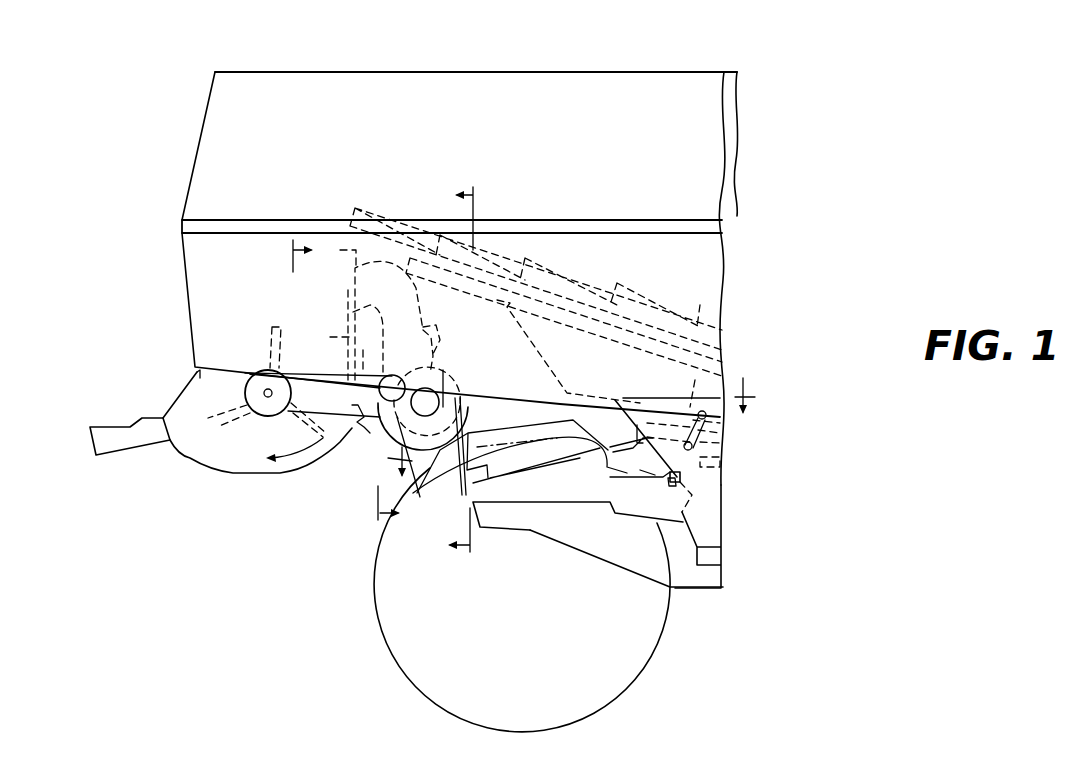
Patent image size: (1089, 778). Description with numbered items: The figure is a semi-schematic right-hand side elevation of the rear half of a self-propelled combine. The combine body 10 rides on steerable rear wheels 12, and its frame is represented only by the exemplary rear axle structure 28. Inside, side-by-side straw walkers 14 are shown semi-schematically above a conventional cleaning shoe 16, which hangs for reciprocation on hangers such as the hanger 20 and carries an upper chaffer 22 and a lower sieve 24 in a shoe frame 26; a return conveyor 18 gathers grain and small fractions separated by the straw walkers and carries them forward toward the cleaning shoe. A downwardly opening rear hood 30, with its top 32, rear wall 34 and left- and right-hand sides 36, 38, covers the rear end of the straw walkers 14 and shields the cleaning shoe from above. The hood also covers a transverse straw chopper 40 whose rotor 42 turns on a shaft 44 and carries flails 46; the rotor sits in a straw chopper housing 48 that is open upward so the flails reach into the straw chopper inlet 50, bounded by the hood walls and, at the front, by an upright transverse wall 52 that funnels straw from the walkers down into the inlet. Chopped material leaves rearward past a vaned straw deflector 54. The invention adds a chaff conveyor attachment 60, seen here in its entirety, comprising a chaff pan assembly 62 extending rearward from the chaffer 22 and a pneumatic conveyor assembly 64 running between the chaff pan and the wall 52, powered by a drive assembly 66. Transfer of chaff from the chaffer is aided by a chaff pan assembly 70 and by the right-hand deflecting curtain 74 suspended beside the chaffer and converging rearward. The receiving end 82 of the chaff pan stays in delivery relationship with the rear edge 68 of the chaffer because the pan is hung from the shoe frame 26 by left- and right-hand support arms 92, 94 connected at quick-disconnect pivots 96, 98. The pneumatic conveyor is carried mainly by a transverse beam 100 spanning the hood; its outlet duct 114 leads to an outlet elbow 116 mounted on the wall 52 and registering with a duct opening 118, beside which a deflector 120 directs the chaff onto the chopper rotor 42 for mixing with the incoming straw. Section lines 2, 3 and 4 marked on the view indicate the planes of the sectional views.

The combine body 10 is at (533, 60).
The steerable rear wheels 12 is at (658, 646).
The straw walkers 14 is at (631, 283).
The cleaning shoe 16 is at (733, 480).
The return conveyor 18 is at (723, 345).
The hanger 20 is at (725, 424).
The chaffer 22 is at (730, 448).
The sieve 24 is at (703, 463).
The shoe frame 26 is at (607, 475).
The rear axle structure 28 is at (598, 569).
The rear hood 30 is at (332, 63).
The top 32 is at (433, 71).
The rear wall 34 is at (197, 153).
The left-hand side 36 is at (741, 93).
The right-hand side 38 is at (698, 71).
The straw chopper 40 is at (238, 479).
The rotor 42 is at (243, 389).
The shaft 44 is at (268, 389).
The flails 46 is at (267, 432).
The straw chopper housing 48 is at (196, 460).
The straw chopper inlet 50 is at (243, 291).
The upright wall 52 is at (355, 369).
The vaned straw deflector 54 is at (115, 426).
The chaff conveyor attachment 60 is at (429, 545).
The chaff pan assembly 62 is at (534, 413).
The pneumatic conveyor assembly 64 is at (447, 338).
The drive assembly 66 is at (345, 420).
The rear edge 68 is at (626, 410).
The chaff pan assembly 70 is at (546, 485).
The right-hand deflecting curtain 74 is at (722, 375).
The receiving end 82 is at (614, 453).
The left-hand support arm 92 is at (642, 471).
The right-hand support arm 94 is at (647, 487).
The left-hand pivot 96 is at (668, 482).
The right-hand pivot 98 is at (686, 486).
The transverse beam 100 is at (430, 318).
The outlet duct 114 is at (328, 348).
The outlet elbow 116 is at (416, 294).
The duct opening 118 is at (352, 313).
The deflector 120 is at (347, 315).
The section line 2 is at (335, 380).
The section line 3 is at (472, 371).
The section line 4 is at (572, 424).